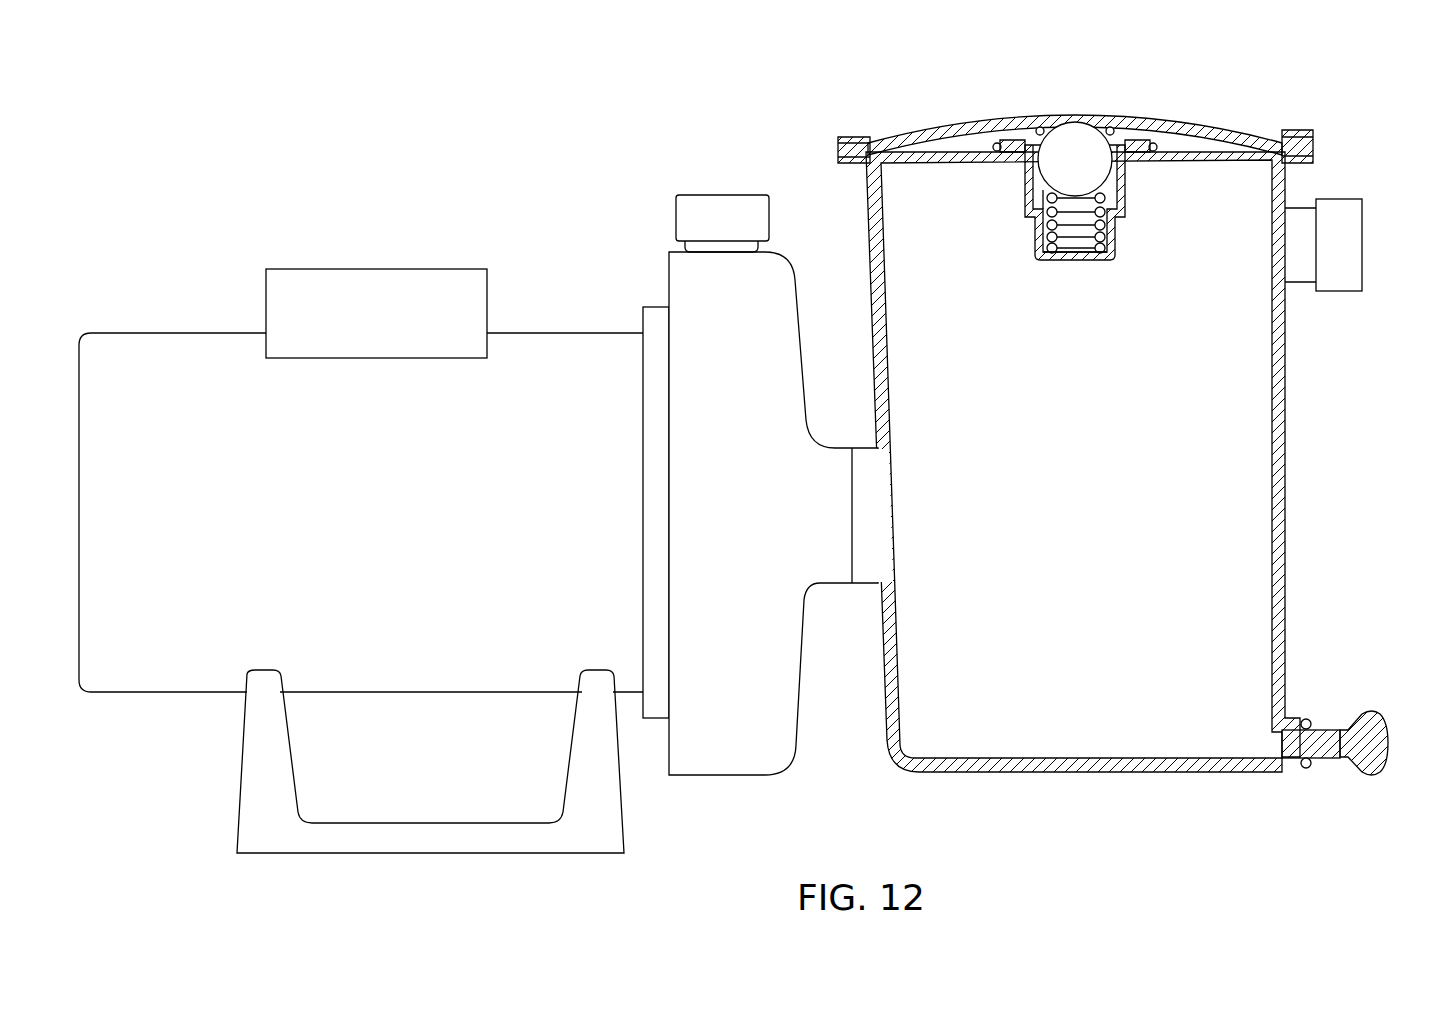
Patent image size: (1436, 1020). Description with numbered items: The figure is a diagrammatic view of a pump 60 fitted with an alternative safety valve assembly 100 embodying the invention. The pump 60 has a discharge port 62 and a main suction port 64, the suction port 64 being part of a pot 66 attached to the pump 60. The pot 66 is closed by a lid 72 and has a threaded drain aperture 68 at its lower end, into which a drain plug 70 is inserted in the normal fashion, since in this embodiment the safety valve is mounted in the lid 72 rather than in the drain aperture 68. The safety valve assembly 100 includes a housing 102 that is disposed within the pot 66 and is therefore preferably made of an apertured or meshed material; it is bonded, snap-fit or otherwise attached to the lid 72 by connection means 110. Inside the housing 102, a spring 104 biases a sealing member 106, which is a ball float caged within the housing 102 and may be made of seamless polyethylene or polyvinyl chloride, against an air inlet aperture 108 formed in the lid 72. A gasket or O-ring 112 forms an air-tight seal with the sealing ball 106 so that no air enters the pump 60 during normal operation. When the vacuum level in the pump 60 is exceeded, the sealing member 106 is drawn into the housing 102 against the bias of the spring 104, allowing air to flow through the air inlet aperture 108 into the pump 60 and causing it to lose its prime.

The pump 60 is at (192, 268).
The discharge port 62 is at (730, 205).
The main suction port 64 is at (1352, 243).
The pot 66 is at (1288, 532).
The threaded aperture 68 is at (1282, 745).
The drain plug 70 is at (1345, 765).
The lid 72 is at (955, 125).
The safety valve assembly 100 is at (1073, 187).
The housing 102 is at (1128, 200).
The spring 104 is at (1110, 256).
The sealing member 106 is at (1075, 158).
The air inlet aperture 108 is at (1068, 115).
The connection means 110 is at (1120, 150).
The gasket or O-ring 112 is at (1035, 143).